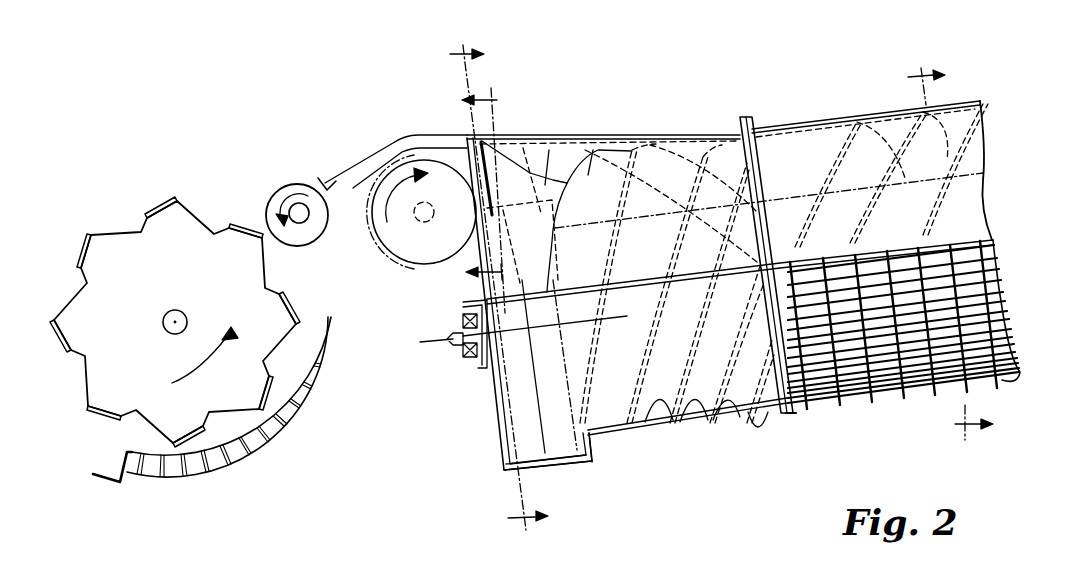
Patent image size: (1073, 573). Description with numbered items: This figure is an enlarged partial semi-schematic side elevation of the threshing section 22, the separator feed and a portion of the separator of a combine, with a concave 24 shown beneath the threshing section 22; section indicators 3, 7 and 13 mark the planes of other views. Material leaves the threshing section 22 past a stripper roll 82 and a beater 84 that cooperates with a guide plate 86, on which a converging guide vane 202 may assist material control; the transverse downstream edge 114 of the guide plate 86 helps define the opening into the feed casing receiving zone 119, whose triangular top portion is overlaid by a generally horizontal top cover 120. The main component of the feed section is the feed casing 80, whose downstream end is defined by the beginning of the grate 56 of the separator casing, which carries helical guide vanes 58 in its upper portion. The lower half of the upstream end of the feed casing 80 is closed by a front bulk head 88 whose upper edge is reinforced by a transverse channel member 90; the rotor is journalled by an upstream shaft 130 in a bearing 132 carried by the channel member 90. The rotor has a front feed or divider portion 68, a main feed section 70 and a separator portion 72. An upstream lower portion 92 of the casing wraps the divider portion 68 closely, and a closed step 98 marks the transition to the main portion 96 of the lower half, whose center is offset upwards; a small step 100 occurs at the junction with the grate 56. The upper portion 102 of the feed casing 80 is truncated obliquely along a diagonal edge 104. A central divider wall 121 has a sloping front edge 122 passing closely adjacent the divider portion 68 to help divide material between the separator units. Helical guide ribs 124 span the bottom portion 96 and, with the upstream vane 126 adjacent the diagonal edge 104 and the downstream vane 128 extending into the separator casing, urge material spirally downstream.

The threshing section 22 is at (216, 292).
The concave 24 is at (230, 463).
The stripper roll 82 is at (291, 184).
The converging guide vane 202 is at (354, 192).
The beater 84 is at (420, 268).
The guide plate 86 is at (420, 134).
The transverse downstream edge of the guide plate 114 is at (462, 134).
The separator portion 72 is at (975, 170).
The upper left-hand portion of the feed casing 102 is at (735, 134).
The helical guide vanes 58 is at (905, 128).
The main feed section 70 is at (651, 201).
The diagonal edge 104 is at (622, 148).
The feed casing receiving zone 119 is at (549, 150).
The top cover 120 is at (575, 150).
The divider wall 121 is at (593, 150).
The front edge of divider wall 122 is at (523, 148).
The upstream vane 126 is at (641, 148).
The downstream vane 128 is at (770, 170).
The section line 13- 13 is at (942, 251).
The section line 3- 3 is at (508, 284).
The section line 7- 7 is at (474, 200).
The front bulk head 88 is at (500, 423).
The front feed or divider portion 68 is at (539, 461).
The transverse channel member 90 is at (480, 376).
The upstream shaft 130 is at (452, 341).
The bearing 132 is at (462, 357).
The upstream lower portion of the casing 92 is at (589, 462).
The closed step 98 is at (596, 442).
The main portion of the lower half of the feed casing 96 is at (758, 430).
The feed casing 80 is at (670, 443).
The helical guide ribs 124 is at (704, 412).
The small step 100 is at (794, 414).
The grate 56 is at (900, 397).